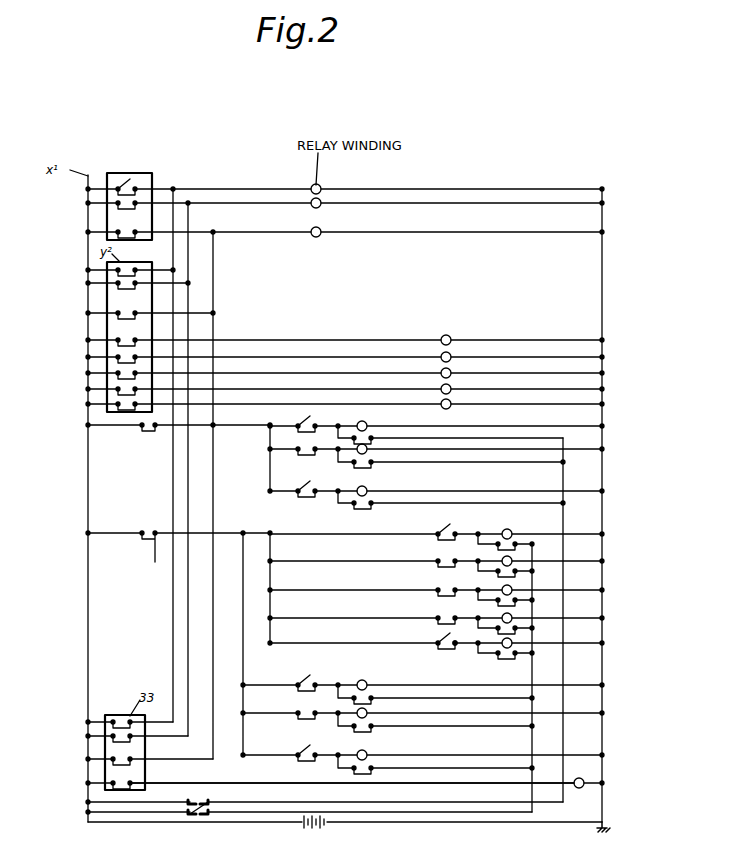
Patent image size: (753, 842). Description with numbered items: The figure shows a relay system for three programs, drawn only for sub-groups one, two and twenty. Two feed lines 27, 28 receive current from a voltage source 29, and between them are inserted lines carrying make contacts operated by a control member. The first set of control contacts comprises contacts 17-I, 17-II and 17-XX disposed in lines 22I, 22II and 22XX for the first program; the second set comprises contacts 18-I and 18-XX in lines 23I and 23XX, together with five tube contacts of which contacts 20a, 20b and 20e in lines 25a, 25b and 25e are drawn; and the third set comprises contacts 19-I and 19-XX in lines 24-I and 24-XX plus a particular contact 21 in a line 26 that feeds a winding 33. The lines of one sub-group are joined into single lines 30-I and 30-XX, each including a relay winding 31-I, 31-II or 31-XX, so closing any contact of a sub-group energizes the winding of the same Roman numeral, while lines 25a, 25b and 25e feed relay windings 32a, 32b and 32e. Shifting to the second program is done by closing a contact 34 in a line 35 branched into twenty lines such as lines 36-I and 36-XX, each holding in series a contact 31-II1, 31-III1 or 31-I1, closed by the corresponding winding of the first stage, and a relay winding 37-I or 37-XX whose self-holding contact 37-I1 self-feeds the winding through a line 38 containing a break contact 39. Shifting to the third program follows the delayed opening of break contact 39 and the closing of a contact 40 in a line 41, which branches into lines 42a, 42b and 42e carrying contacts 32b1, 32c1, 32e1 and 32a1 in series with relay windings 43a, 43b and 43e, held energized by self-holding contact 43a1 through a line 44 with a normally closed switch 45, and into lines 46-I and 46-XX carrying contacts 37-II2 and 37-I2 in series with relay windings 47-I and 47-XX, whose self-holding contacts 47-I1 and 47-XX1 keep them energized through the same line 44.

The control contact 17-I is at (128, 186).
The control contact 17-II is at (135, 209).
The control contact 17-XX is at (133, 245).
The line 22I is at (95, 188).
The line 22II is at (100, 203).
The line 22XX is at (102, 232).
The line 23I is at (100, 270).
The line 23XX is at (100, 313).
The control contact 18-I is at (123, 289).
The control contact 18-XX is at (132, 318).
The contact 20a is at (118, 340).
The contact 20b is at (118, 357).
The contact 20e is at (122, 412).
The contact 34 is at (144, 431).
The line 35 is at (228, 433).
The relay winding 31-I is at (320, 190).
The relay winding 31-II is at (321, 203).
The relay winding 31-XX is at (320, 232).
The line 30-I is at (412, 190).
The line 30-XX is at (416, 232).
The line 25a is at (311, 340).
The line 25b is at (311, 357).
The line 25e is at (357, 404).
The relay winding 32a is at (450, 338).
The relay winding 32b is at (451, 357).
The relay winding 32e is at (450, 407).
The line 36-I is at (490, 428).
The line 36-XX is at (480, 491).
The contact 31-II1 is at (293, 419).
The contact 31-III1 is at (296, 444).
The contact 31-I1 is at (300, 484).
The relay winding 37-I is at (366, 425).
The self-holding contact 37-I1 is at (356, 435).
The relay winding 37-XX is at (367, 491).
The line 38 is at (564, 527).
The contact 40 is at (144, 548).
The line 41 is at (226, 533).
The line 42a is at (291, 534).
The line 42b is at (296, 561).
The line 42e is at (296, 643).
The contact 32b1 is at (446, 532).
The contact 32c1 is at (438, 561).
The contact 32e1 is at (442, 641).
The contact 32a1 is at (457, 647).
The relay winding 43a is at (512, 532).
The self-holding contact 43a1 is at (490, 546).
The relay winding 43b is at (512, 560).
The relay winding 43e is at (512, 644).
The line 44 is at (533, 682).
The feed line 28 is at (603, 672).
The feed line 27 is at (88, 580).
The contact 37-II2 is at (303, 683).
The contact 37-I2 is at (303, 753).
The relay winding 47-I is at (362, 679).
The self-holding contact 47-I1 is at (371, 701).
The relay winding 47-XX is at (365, 751).
The self-holding contact 47-XX1 is at (357, 773).
The line 46-I is at (462, 685).
The line 46-XX is at (437, 756).
The line 26 is at (272, 783).
The winding 33 is at (585, 776).
The line 24-I is at (97, 716).
The line 24-XX is at (102, 760).
The control contact 19-I is at (122, 722).
The control contact 19-XX is at (122, 759).
The contact 21 is at (88, 800).
The break contact 39 is at (198, 800).
The switch 45 is at (212, 808).
The voltage source 29 is at (316, 818).